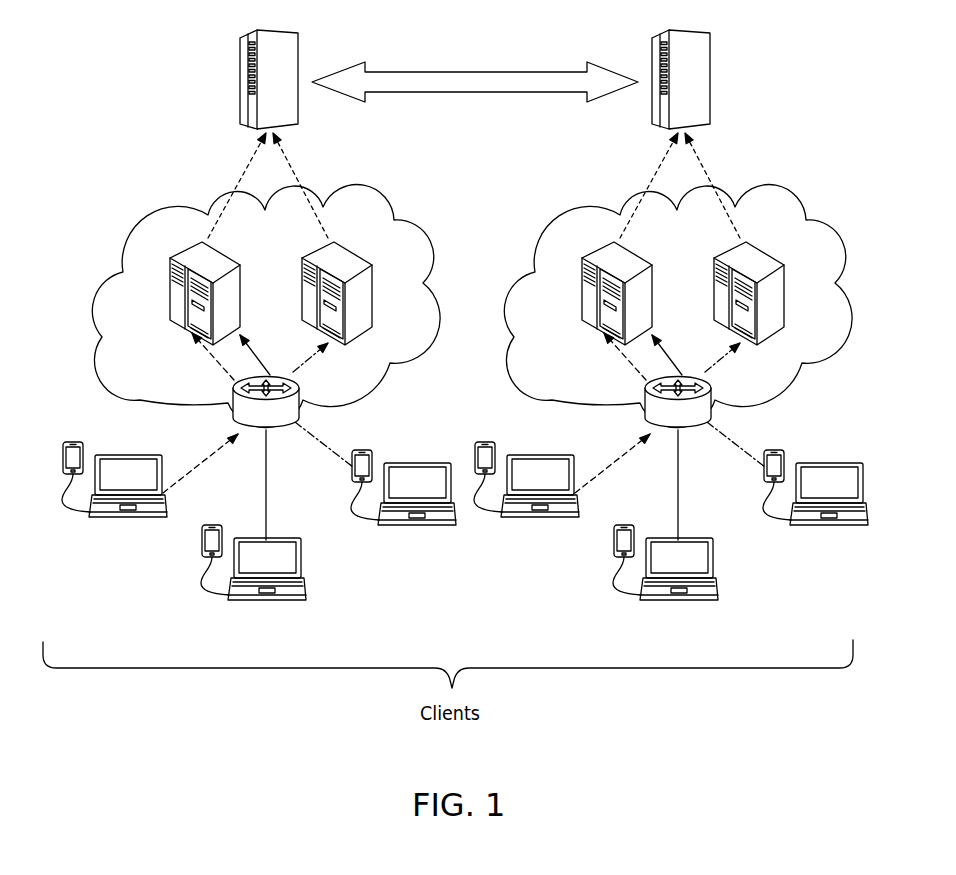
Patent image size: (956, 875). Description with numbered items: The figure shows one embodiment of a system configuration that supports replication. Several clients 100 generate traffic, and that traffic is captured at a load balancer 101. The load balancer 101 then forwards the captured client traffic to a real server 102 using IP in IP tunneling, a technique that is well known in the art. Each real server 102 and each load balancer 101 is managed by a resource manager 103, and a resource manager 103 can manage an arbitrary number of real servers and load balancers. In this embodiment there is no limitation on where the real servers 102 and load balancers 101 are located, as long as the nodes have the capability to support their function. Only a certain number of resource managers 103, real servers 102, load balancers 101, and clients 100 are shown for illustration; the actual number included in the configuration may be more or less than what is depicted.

The client 100 is at (465, 541).
The load balancer 101 is at (775, 427).
The real server 102 is at (471, 285).
The resource manager 103 is at (474, 66).